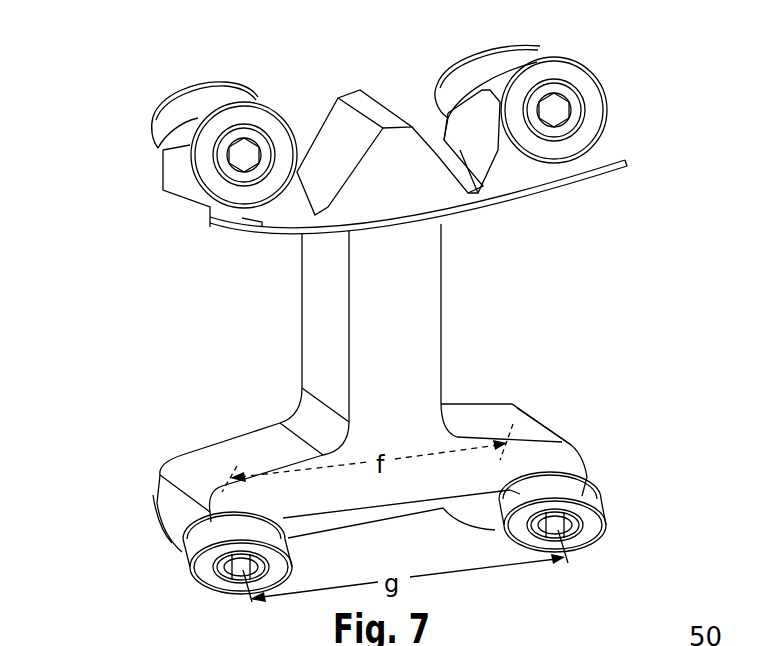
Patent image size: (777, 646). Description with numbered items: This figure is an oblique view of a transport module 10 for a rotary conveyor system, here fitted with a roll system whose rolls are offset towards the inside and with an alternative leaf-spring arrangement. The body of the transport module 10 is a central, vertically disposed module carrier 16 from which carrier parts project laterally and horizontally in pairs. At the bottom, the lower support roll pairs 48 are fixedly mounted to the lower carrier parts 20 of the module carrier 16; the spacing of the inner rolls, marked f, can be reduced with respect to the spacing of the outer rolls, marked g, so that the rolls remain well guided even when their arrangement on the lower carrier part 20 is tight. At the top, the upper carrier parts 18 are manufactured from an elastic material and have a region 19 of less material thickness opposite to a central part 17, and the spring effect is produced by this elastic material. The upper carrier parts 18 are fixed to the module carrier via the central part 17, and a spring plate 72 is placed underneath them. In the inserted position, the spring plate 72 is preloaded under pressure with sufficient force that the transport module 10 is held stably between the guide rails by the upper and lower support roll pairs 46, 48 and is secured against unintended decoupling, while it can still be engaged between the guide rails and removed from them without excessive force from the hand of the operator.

The transport module 10 is at (112, 74).
The module carrier 16 is at (415, 323).
The central part 17 is at (400, 150).
The upper carrier parts 18 is at (222, 212).
The region of less material thickness 19 is at (323, 217).
The lower carrier parts 20 is at (522, 457).
The upper support roll pair 46 is at (173, 115).
The lower support roll pair 48 is at (205, 555).
The spring plate 72 is at (260, 227).